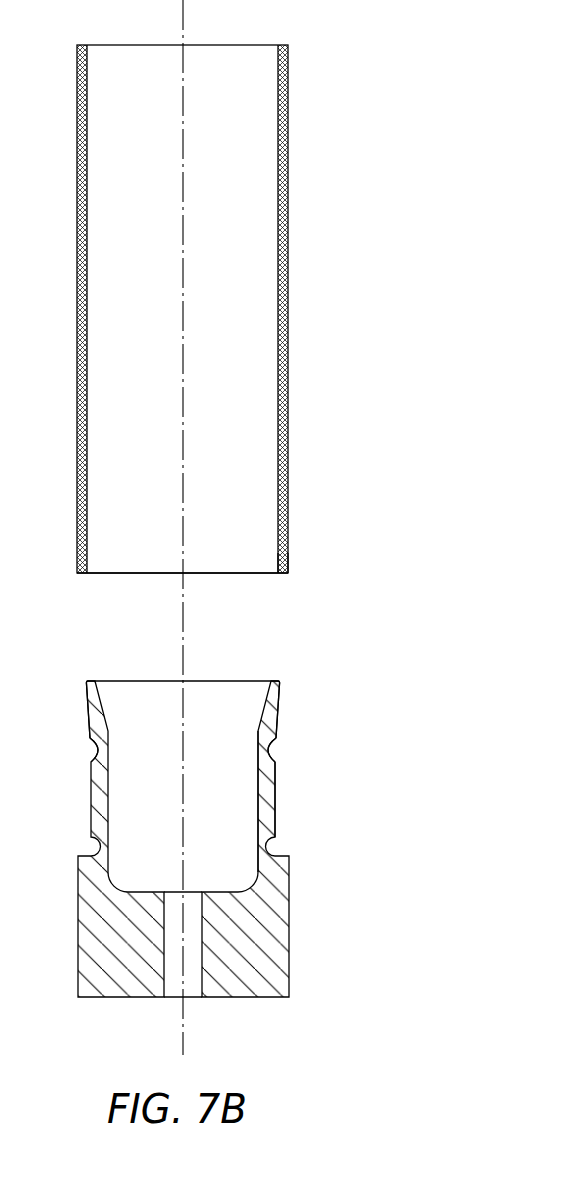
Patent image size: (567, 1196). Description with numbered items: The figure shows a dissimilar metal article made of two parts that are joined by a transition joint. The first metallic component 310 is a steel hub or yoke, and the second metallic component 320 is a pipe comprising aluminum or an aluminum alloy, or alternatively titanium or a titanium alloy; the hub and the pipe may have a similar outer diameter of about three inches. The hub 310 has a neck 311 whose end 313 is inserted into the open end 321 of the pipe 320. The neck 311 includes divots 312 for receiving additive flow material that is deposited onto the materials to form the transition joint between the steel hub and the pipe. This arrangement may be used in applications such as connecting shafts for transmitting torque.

The second metallic component 320 is at (325, 117).
The open end 321 is at (282, 570).
The first metallic component 310 is at (308, 726).
The end 313 is at (278, 682).
The divots 312 is at (96, 752).
The neck 311 is at (263, 822).